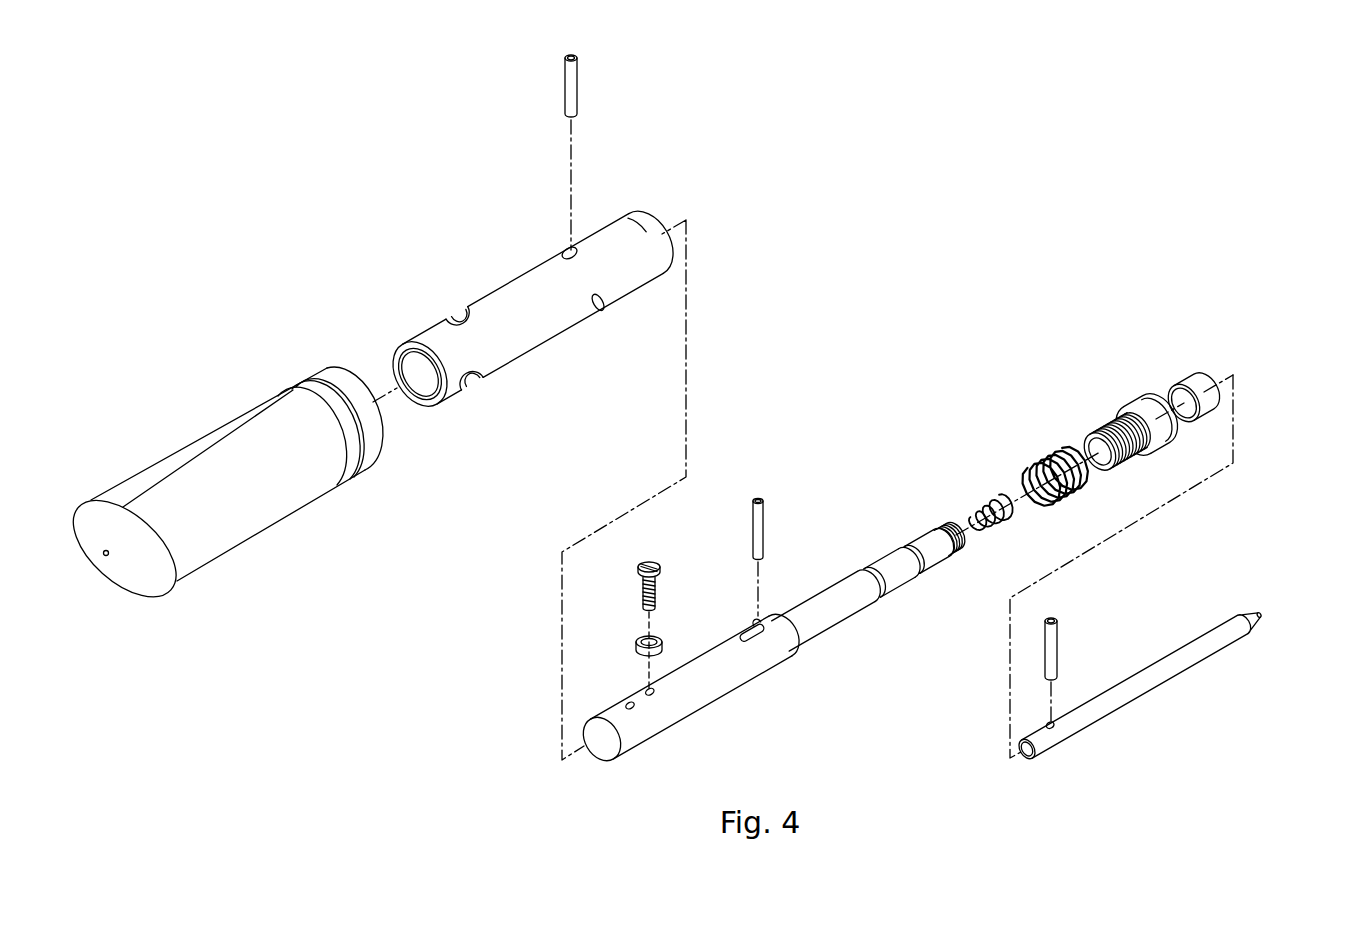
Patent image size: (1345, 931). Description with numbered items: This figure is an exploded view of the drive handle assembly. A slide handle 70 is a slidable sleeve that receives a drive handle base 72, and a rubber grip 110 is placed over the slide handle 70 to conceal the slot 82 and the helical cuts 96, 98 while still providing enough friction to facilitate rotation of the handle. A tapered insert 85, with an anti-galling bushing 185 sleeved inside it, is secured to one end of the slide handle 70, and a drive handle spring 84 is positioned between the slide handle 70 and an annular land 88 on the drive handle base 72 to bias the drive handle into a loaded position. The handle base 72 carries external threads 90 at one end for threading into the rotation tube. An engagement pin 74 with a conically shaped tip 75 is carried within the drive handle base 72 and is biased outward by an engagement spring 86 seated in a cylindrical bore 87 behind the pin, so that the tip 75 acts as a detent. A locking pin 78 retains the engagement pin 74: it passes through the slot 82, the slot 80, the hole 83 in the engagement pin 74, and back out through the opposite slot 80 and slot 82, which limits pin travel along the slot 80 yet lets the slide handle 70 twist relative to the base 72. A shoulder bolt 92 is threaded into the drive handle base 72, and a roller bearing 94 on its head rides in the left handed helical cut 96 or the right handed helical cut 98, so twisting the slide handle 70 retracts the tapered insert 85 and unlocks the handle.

The slide handle 70 is at (512, 273).
The drive handle base 72 is at (710, 705).
The engagement pin 74 is at (1152, 693).
The conically shaped tip 75 is at (1260, 613).
The locking pin 78 is at (562, 82).
The slot 80 is at (742, 627).
The slot 82 is at (555, 252).
The hole 83 is at (1060, 732).
The drive handle spring 84 is at (1022, 462).
The tapered insert 85 is at (1115, 397).
The engagement spring 86 is at (967, 505).
The cylindrical bore 87 is at (767, 658).
The annular land 88 is at (767, 615).
The external threads 90 is at (960, 552).
The shoulder bolt 92 is at (633, 568).
The roller bearing 94 is at (633, 645).
The left handed helical cut 96 is at (487, 385).
The right handed helical cut 98 is at (442, 318).
The rubber grip 110 is at (253, 545).
The bushing 185 is at (1175, 373).